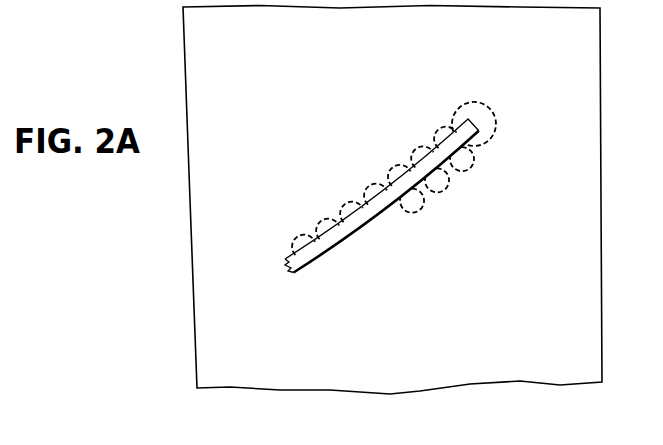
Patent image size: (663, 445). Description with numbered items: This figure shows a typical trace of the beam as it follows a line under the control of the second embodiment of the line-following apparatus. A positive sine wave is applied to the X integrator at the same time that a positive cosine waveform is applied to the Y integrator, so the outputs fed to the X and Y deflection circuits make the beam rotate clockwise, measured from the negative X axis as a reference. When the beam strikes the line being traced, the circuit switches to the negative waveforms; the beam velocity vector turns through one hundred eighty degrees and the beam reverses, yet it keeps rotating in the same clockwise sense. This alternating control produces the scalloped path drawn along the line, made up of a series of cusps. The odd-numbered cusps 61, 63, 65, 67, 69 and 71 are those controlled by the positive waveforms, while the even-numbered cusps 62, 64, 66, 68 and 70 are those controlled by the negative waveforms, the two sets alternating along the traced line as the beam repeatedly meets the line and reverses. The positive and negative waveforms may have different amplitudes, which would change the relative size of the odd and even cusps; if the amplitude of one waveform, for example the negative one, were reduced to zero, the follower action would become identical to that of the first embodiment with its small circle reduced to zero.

The odd-numbered cusp 61 is at (292, 239).
The even-numbered cusp 62 is at (317, 220).
The odd-numbered cusp 63 is at (343, 205).
The even-numbered cusp 64 is at (365, 174).
The odd-numbered cusp 65 is at (393, 163).
The even-numbered cusp 66 is at (418, 148).
The odd-numbered cusp 67 is at (440, 128).
The even-numbered cusp 68 is at (491, 105).
The odd-numbered cusp 69 is at (471, 173).
The even-numbered cusp 70 is at (448, 192).
The odd-numbered cusp 71 is at (421, 212).